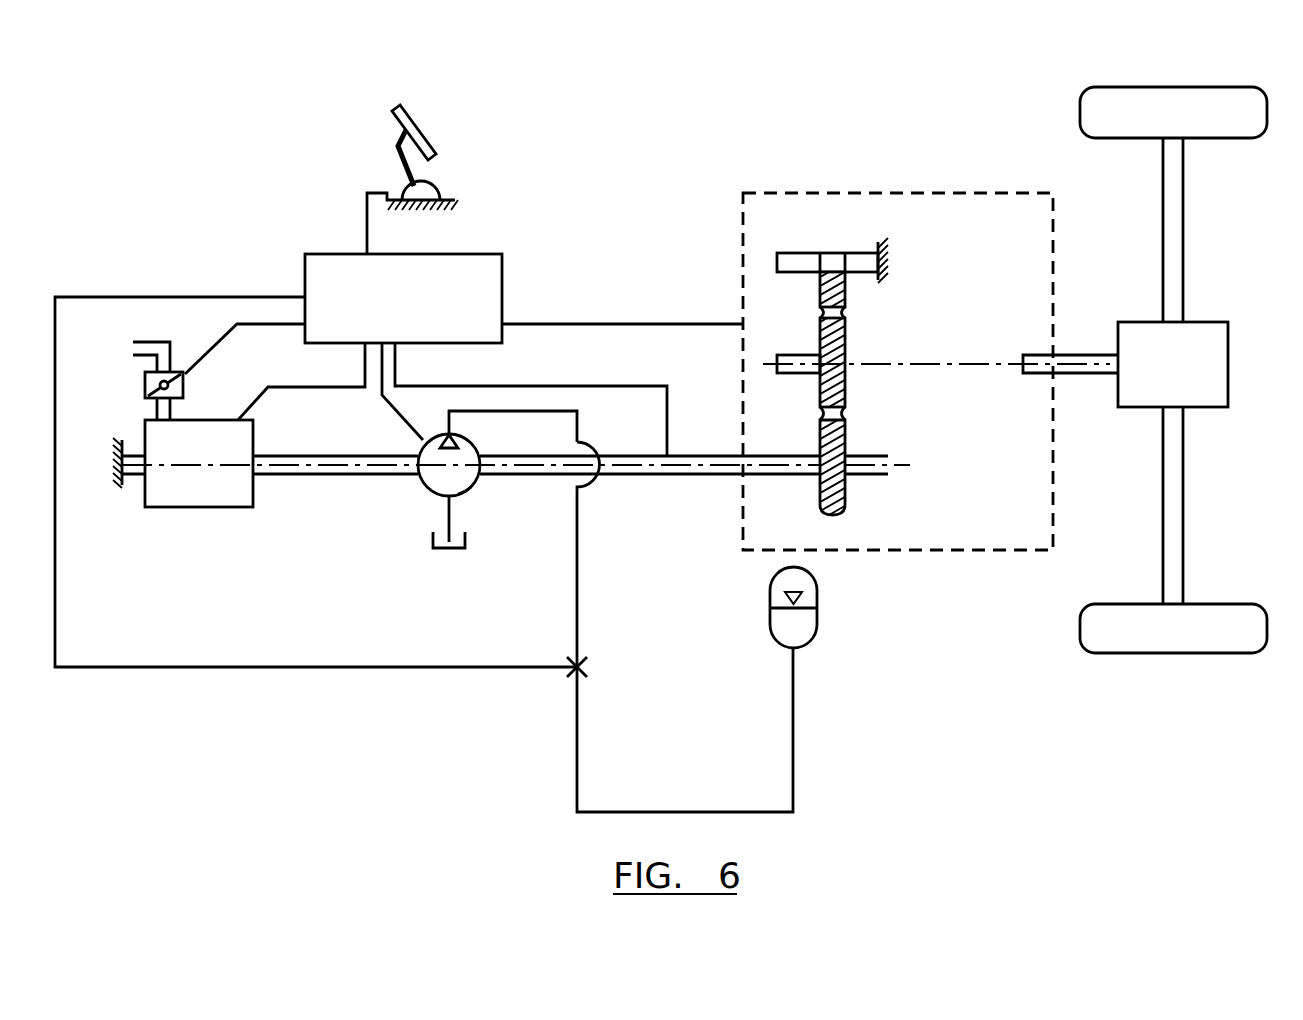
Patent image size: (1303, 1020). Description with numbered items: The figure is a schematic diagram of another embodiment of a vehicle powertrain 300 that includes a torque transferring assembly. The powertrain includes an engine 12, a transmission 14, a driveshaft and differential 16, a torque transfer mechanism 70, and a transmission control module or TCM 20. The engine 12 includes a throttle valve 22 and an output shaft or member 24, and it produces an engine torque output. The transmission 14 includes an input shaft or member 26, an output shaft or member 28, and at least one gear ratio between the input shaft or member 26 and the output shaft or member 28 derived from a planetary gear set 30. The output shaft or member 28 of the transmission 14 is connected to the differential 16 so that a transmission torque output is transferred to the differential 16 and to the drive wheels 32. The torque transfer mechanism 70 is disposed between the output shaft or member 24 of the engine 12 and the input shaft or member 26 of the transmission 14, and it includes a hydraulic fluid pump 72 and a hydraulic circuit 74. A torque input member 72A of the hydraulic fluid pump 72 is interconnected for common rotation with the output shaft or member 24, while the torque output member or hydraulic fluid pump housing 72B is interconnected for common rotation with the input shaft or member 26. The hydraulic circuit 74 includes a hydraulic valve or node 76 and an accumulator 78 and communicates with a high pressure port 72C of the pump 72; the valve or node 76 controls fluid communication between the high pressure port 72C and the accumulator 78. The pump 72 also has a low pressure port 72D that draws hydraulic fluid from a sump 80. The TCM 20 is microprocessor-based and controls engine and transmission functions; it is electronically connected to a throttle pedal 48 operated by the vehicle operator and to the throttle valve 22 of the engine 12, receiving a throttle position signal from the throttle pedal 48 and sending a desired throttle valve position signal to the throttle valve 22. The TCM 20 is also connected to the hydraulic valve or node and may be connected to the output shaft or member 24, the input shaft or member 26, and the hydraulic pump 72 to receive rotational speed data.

The vehicle powertrain 300 is at (910, 95).
The engine 12 is at (186, 508).
The transmission 14 is at (842, 192).
The driveshaft and differential 16 is at (1208, 367).
The transmission control module 20 is at (387, 316).
The throttle valve 22 is at (145, 385).
The output shaft or member 24 is at (288, 456).
The input shaft or member 26 is at (725, 455).
The output shaft or member 28 is at (1083, 377).
The planetary gear set 30 is at (843, 524).
The drive wheels 32 is at (1183, 105).
The throttle pedal 48 is at (422, 130).
The torque transfer mechanism 70 is at (455, 690).
The hydraulic fluid pump 72 is at (425, 488).
The torque input member 72A is at (414, 456).
The hydraulic fluid pump housing 72B is at (480, 484).
The high pressure port 72C is at (455, 418).
The low pressure port 72D is at (441, 512).
The hydraulic circuit 74 is at (548, 748).
The hydraulic valve or node 76 is at (590, 672).
The accumulator 78 is at (806, 645).
The sump 80 is at (447, 550).